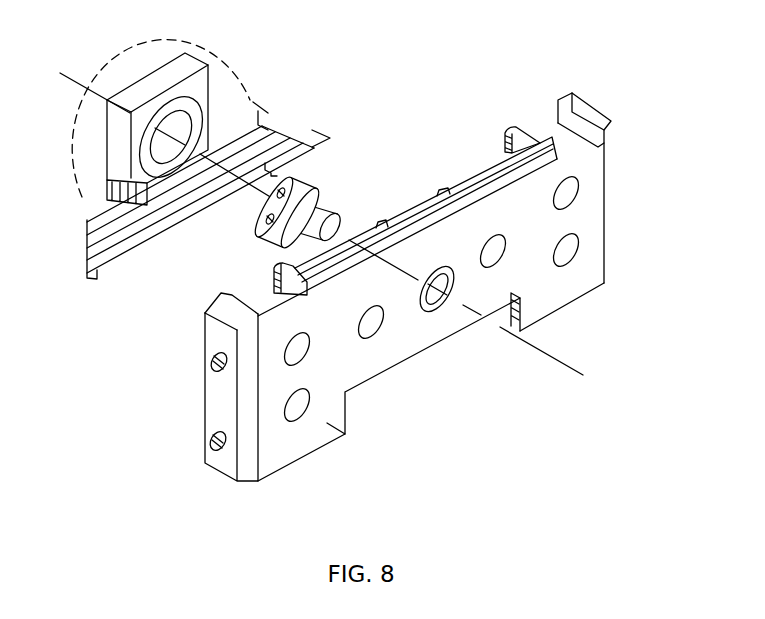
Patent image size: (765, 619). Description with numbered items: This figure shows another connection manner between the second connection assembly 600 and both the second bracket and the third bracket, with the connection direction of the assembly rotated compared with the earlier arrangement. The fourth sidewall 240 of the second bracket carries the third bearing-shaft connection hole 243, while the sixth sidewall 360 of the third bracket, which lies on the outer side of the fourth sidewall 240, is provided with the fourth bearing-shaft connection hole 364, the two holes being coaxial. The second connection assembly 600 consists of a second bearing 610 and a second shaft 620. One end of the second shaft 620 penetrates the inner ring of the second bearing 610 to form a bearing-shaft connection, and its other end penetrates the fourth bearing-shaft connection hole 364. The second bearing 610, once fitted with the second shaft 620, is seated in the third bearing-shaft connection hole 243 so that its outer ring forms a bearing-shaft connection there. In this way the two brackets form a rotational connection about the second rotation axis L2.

The third bearing-shaft connection hole 243 is at (159, 108).
The fourth sidewall 240 is at (100, 233).
The second connection assembly 600 is at (339, 168).
The second bearing 610 is at (309, 188).
The second shaft 620 is at (337, 207).
The sixth sidewall 360 is at (408, 301).
The fourth bearing-shaft connection hole 364 is at (432, 305).
The second rotation axis L2 is at (567, 363).